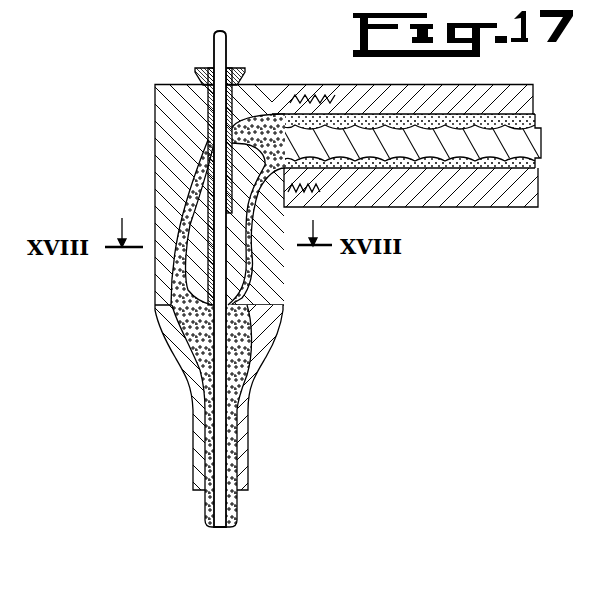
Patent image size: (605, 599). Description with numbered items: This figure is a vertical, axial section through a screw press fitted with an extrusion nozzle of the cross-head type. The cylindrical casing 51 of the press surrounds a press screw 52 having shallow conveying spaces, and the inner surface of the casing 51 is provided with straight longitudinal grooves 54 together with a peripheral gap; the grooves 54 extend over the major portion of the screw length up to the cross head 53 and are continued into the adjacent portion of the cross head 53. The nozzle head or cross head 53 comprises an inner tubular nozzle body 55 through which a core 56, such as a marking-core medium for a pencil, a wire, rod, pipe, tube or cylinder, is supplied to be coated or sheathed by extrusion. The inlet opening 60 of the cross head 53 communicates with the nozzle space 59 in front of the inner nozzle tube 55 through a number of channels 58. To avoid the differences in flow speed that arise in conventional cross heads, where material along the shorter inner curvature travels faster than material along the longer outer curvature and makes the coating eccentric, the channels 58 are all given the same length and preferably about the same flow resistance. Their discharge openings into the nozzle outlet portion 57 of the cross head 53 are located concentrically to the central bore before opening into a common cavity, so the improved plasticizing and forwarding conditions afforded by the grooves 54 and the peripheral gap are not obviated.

The cylindrical casing 51 is at (428, 145).
The press screw 52 is at (535, 135).
The cross head 53 is at (157, 152).
The longitudinal grooves 54 is at (537, 103).
The inner tubular nozzle body 55 is at (210, 190).
The core 56 is at (212, 33).
The nozzle outlet portion 57 is at (270, 346).
The channels 58 is at (170, 283).
The nozzle space 59 is at (240, 371).
The inlet opening 60 is at (268, 112).